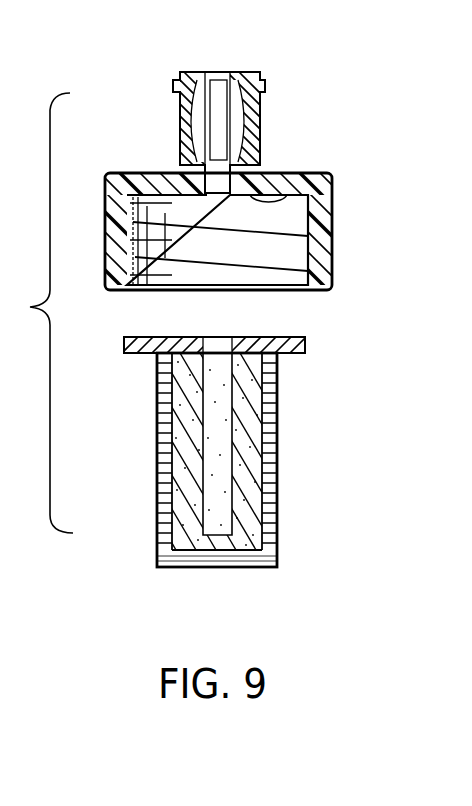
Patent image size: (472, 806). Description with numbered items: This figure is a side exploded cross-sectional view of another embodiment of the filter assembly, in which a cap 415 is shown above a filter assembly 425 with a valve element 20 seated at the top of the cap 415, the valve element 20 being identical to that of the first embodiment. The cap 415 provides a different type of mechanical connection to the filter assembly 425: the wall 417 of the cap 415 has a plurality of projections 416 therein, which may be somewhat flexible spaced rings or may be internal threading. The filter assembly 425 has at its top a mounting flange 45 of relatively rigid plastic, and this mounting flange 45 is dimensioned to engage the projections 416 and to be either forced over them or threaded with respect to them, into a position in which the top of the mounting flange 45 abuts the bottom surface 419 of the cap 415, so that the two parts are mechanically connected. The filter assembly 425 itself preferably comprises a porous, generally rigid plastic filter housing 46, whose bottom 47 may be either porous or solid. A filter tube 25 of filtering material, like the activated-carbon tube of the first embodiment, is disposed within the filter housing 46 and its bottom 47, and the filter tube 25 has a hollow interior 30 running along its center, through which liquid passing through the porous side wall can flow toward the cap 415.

The valve element 20 is at (146, 60).
The cap 415 is at (235, 212).
The projections 416 is at (143, 262).
The wall 417 is at (333, 207).
The bottom surface 419 is at (293, 190).
The filter assembly 425 is at (212, 463).
The mounting flange 45 is at (270, 337).
The filter housing 46 is at (277, 420).
The hollow interior 30 is at (210, 472).
The filter tube 25 is at (210, 508).
The bottom 47 is at (243, 552).